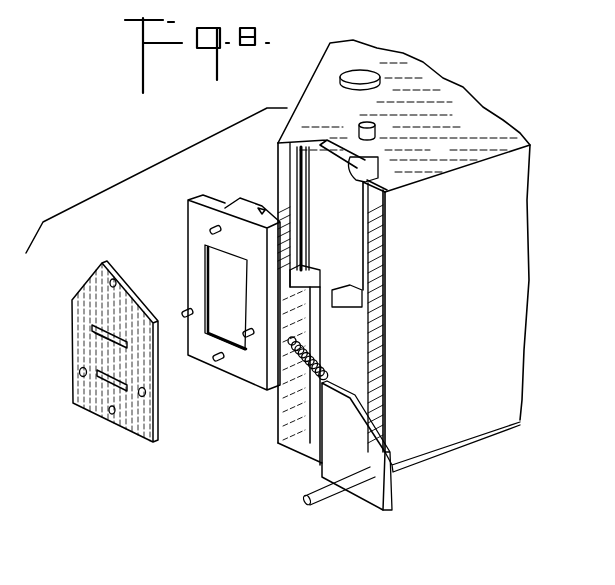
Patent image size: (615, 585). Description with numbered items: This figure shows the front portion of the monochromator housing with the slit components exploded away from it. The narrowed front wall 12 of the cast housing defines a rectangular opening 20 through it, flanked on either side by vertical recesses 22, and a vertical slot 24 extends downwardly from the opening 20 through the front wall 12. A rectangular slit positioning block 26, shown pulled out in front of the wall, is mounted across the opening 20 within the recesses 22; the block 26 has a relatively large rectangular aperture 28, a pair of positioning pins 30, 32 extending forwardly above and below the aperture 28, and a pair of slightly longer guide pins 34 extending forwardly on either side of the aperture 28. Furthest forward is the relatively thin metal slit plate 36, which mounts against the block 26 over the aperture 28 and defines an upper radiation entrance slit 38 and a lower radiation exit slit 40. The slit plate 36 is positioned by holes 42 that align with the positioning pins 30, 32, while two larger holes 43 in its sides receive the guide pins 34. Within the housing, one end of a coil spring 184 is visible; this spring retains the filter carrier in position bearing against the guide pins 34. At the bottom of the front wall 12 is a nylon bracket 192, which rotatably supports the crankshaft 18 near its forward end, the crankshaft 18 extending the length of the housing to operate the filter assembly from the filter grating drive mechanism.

The narrowed front wall 12 is at (293, 437).
The crankshaft 18 is at (423, 458).
The rectangular opening 20 is at (367, 151).
The vertical recesses 22 is at (291, 163).
The vertical slot 24 is at (323, 332).
The slit positioning block 26 is at (190, 213).
The rectangular aperture 28 is at (206, 250).
The positioning pin 30 is at (214, 229).
The positioning pin 32 is at (216, 363).
The guide pins 34 is at (184, 312).
The slit plate 36 is at (132, 438).
The radiation entrance slit 38 is at (90, 327).
The radiation exit slit 40 is at (118, 383).
The holes 42 is at (121, 272).
The larger holes 43 is at (138, 392).
The coil spring 184 is at (328, 360).
The nylon bracket 192 is at (353, 423).